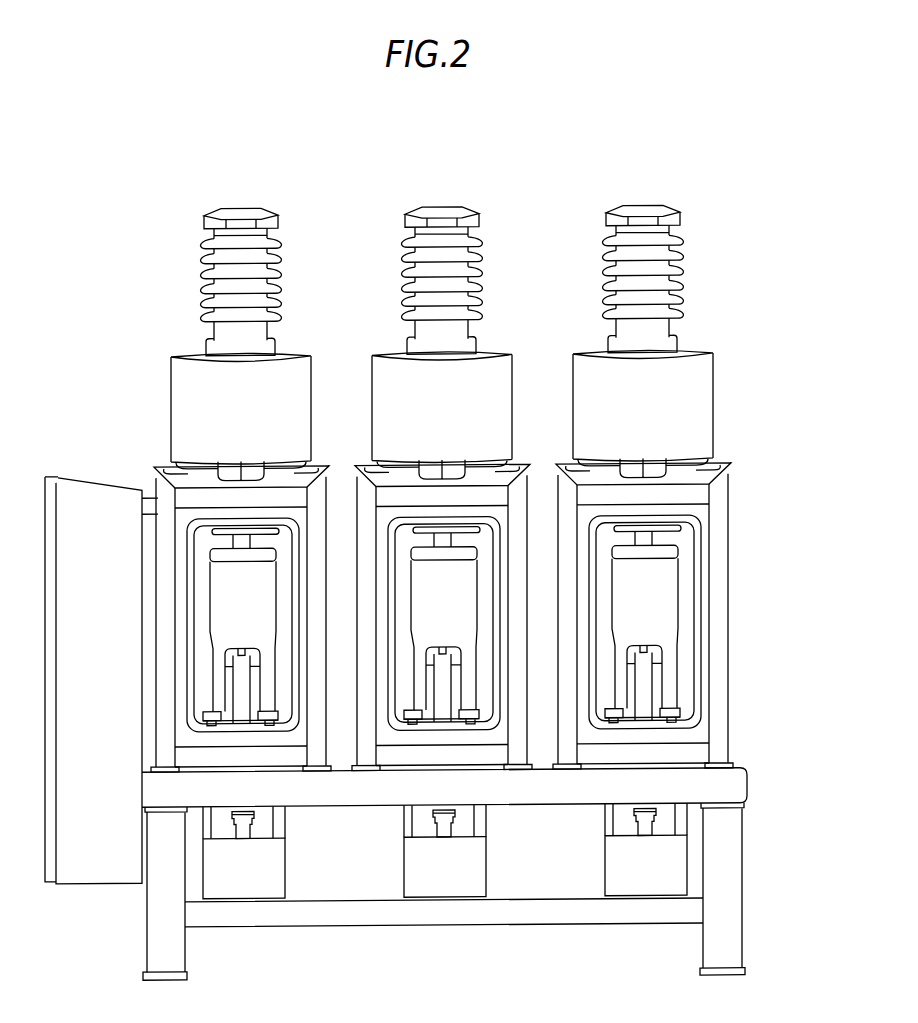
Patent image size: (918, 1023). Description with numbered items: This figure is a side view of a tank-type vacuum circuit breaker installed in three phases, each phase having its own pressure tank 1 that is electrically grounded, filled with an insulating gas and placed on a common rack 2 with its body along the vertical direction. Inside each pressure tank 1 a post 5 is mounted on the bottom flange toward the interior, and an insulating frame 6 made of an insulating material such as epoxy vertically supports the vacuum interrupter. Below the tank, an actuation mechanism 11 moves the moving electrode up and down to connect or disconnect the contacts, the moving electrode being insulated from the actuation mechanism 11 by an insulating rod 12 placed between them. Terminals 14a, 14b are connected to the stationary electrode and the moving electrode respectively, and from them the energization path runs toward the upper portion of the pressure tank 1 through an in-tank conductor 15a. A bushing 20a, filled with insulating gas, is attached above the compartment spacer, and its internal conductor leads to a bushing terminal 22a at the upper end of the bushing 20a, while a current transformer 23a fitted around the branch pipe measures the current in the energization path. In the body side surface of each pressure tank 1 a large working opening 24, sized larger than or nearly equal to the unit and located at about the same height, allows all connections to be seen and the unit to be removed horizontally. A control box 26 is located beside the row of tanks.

The pressure tank 1 is at (728, 495).
The rack 2 is at (748, 793).
The post 5 is at (654, 718).
The insulating frame 6 is at (678, 625).
The actuation mechanism 11 is at (688, 868).
The insulating rod 12 is at (654, 697).
The terminal 14a is at (678, 547).
The terminal 14b is at (660, 650).
The in-tank conductor 15a is at (676, 522).
The bushing 20a is at (678, 280).
The bushing terminal 22a is at (673, 202).
The current transformer 23a is at (712, 403).
The working opening 24 is at (686, 590).
The control box 26 is at (100, 479).